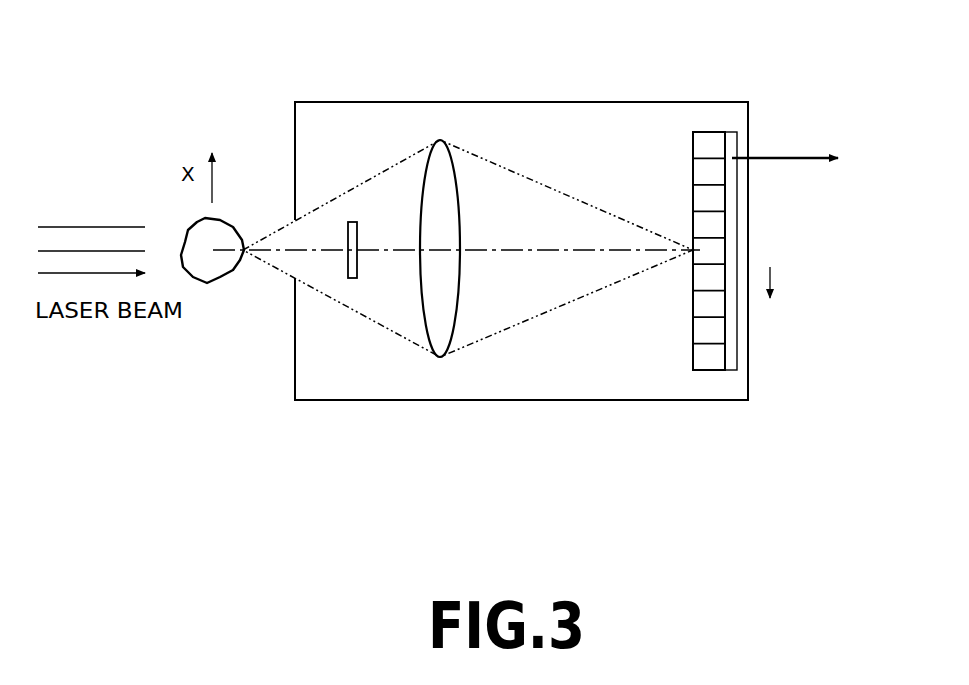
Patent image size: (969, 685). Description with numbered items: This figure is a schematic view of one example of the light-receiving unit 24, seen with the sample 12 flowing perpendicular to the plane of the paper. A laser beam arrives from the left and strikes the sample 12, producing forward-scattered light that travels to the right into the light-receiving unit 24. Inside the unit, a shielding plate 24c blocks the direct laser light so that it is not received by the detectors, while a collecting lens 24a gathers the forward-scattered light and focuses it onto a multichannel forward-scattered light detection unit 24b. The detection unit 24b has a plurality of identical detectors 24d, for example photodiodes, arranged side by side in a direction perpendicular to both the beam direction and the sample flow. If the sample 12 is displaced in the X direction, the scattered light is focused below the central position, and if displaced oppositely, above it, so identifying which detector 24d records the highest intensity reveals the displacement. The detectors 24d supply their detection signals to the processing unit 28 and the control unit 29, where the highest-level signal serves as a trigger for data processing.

The sample 12 is at (225, 232).
The light-receiving unit 24 is at (587, 102).
The collecting lens 24a is at (440, 140).
The multichannel forward-scattered light detection unit 24b is at (713, 380).
The shielding plate 24c is at (353, 278).
The detectors 24d is at (712, 147).
The processing unit 28 is at (817, 158).
The control unit 29 is at (817, 158).